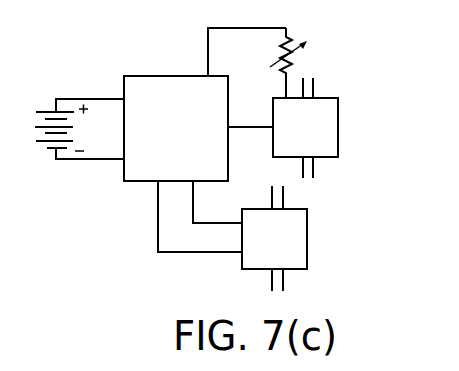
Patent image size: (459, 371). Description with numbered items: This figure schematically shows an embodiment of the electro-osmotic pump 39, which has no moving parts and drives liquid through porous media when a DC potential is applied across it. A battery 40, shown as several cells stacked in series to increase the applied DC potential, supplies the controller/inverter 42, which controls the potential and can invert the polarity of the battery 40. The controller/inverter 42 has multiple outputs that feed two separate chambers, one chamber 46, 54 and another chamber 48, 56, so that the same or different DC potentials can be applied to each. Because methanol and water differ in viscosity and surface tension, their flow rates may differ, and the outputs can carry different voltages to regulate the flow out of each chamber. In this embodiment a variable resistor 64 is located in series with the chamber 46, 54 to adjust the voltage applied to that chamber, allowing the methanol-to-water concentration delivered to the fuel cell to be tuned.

The electro-osmotic pump 39 is at (102, 58).
The battery 40 is at (40, 131).
The controller/inverter 42 is at (186, 137).
The chamber 46 is at (339, 128).
The chamber 54 is at (307, 131).
The chamber 48 is at (306, 238).
The chamber 56 is at (275, 243).
The variable resistor 64 is at (277, 45).